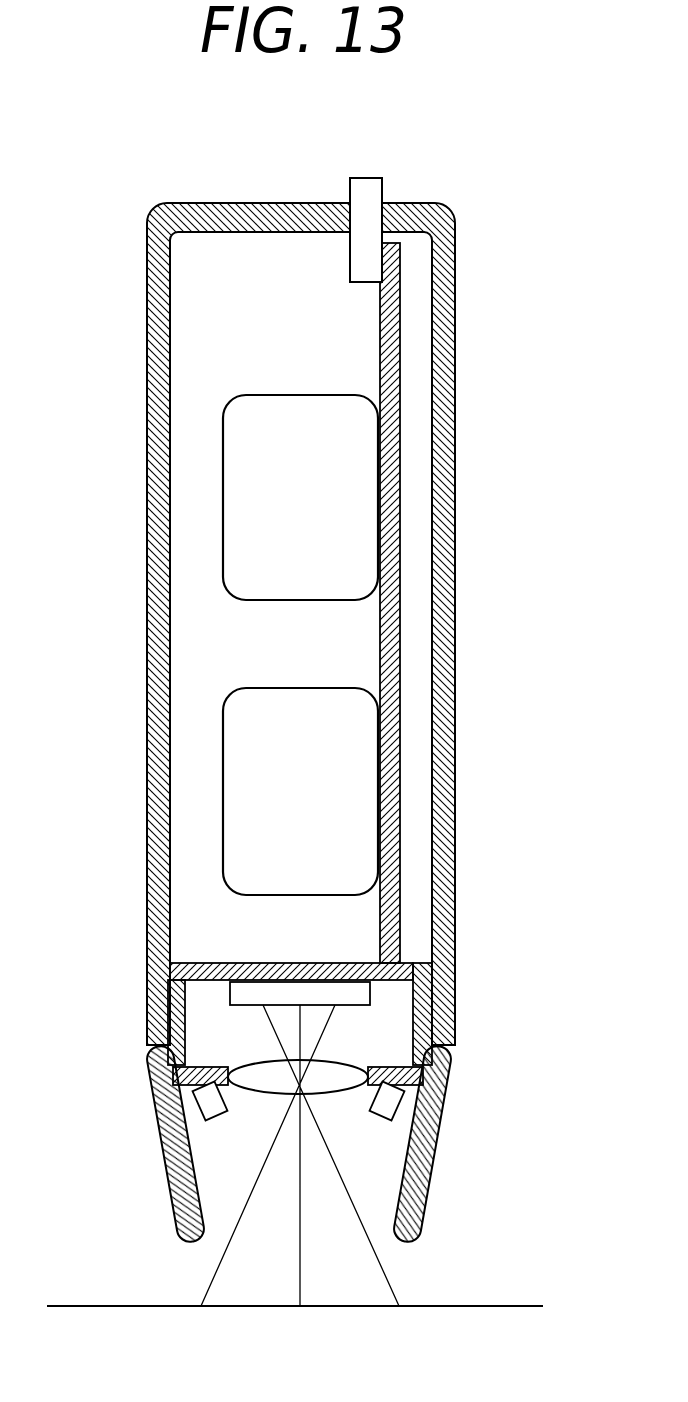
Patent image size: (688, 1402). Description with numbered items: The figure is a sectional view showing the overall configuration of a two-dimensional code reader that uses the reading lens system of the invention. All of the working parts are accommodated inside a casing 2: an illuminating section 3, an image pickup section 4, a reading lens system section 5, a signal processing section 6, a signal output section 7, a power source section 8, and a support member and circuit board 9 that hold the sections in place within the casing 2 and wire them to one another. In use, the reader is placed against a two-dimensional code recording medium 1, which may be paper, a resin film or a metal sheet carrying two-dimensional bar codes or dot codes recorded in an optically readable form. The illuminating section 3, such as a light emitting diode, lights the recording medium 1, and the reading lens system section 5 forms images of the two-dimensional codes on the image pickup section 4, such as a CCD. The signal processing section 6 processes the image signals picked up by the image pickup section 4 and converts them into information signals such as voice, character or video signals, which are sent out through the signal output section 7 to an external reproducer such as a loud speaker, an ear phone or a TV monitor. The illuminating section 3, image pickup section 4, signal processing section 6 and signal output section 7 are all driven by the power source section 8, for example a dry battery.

The two-dimensional code recording medium 1 is at (485, 1306).
The casing 2 is at (455, 280).
The illuminating section 3 is at (213, 1117).
The image pickup section 4 is at (230, 992).
The reading lens system section 5 is at (330, 1093).
The signal processing section 6 is at (288, 688).
The signal output section 7 is at (362, 178).
The power source section 8 is at (290, 395).
The circuit board 9 is at (397, 880).